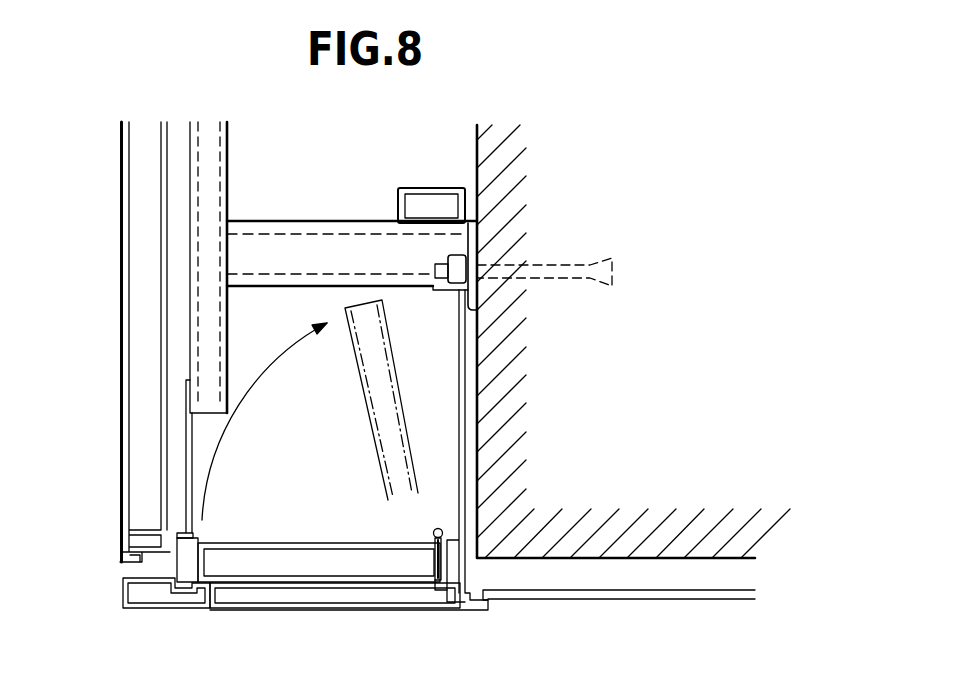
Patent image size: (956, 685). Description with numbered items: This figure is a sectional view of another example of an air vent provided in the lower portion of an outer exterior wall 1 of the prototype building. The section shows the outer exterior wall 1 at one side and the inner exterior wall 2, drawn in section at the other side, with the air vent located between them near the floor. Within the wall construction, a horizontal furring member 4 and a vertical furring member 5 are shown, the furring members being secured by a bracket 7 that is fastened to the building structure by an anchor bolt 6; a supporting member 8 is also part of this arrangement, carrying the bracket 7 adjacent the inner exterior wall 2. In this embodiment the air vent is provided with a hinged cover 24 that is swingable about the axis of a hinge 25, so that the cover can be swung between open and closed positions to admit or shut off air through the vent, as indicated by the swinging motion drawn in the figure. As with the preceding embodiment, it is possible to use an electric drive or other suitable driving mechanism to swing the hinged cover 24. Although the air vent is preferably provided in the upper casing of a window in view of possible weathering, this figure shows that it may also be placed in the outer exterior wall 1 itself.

The outer exterior wall 1 is at (137, 479).
The inner exterior wall 2 is at (742, 547).
The horizontal furring member 4 is at (407, 188).
The vertical furring member 5 is at (228, 143).
The anchor bolt 6 is at (541, 279).
The bracket for securing the furring members 7 is at (468, 289).
The supporting member 8 is at (326, 221).
The hinged cover 24 is at (386, 572).
The hinge 25 is at (432, 530).